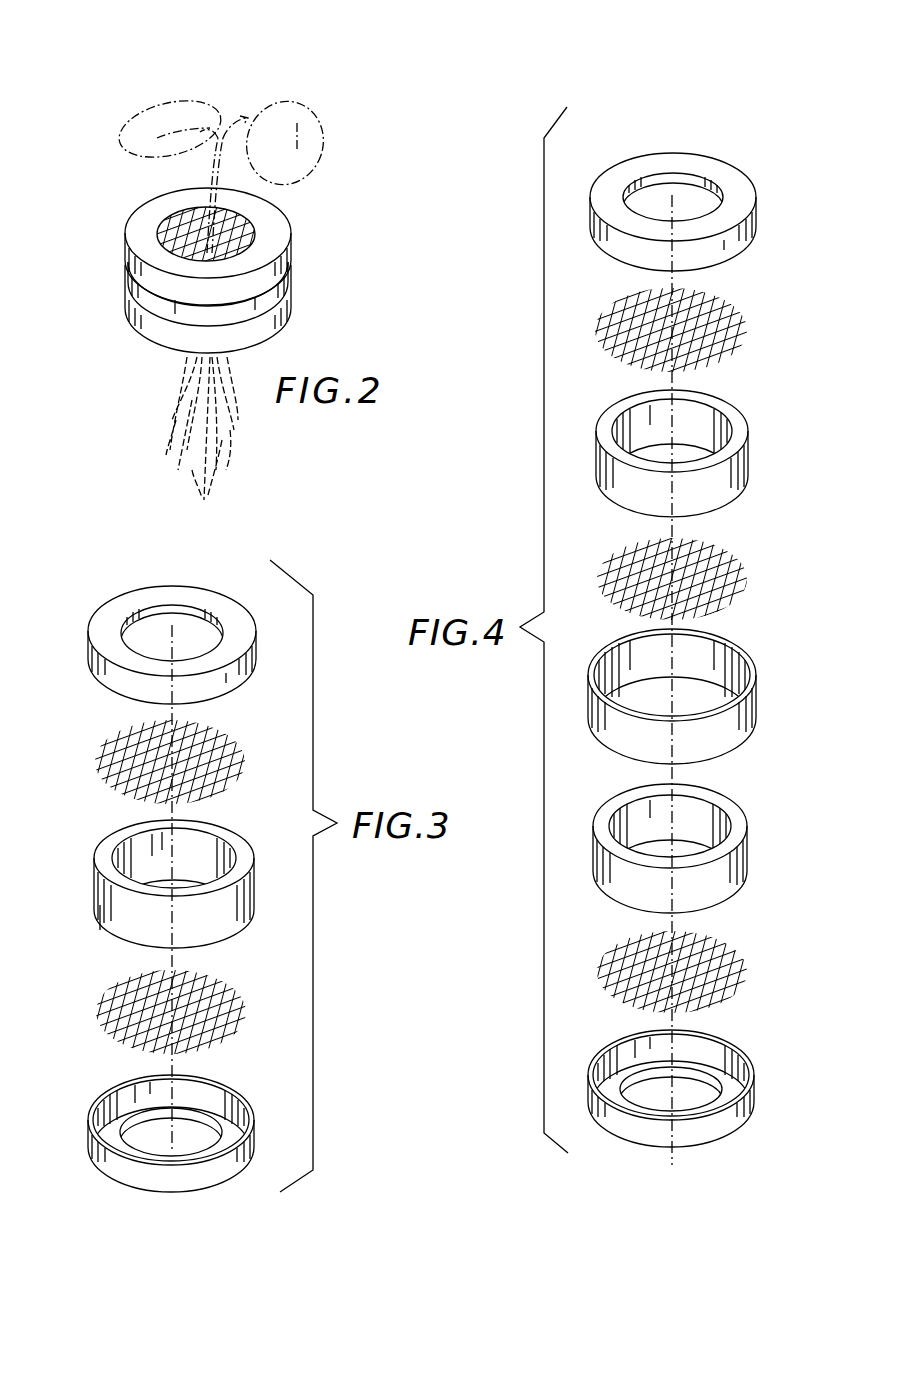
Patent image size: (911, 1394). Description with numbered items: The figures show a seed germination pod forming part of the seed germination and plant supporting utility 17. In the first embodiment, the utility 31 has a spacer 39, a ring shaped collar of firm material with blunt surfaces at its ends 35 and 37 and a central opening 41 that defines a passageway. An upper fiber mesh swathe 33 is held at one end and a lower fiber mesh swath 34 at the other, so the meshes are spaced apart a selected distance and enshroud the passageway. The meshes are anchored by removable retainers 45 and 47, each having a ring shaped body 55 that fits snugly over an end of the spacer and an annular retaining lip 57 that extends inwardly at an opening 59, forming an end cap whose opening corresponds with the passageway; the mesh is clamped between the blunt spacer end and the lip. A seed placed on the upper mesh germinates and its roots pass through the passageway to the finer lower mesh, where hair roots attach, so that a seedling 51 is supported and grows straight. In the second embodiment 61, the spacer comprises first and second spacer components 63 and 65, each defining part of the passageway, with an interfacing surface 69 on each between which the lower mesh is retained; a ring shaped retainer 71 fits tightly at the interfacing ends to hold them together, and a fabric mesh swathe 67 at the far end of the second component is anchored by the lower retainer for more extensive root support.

In FIG. 2, the seed germination and plant supporting utility 17 is at (305, 288).
In FIG. 3, the seed germination and plant supporting utility 17 is at (65, 797).
In FIG. 4, the seed germination and plant supporting utility 17 is at (773, 370).
In FIG. 2, the utility 31 is at (125, 225).
In FIG. 3, the utility 31 is at (74, 790).
In FIG. 2, the upper fiber mesh swathe 33 is at (178, 215).
In FIG. 3, the upper fiber mesh swathe 33 is at (230, 740).
In FIG. 4, the upper fiber mesh swathe 33 is at (618, 293).
In FIG. 3, the lower fiber mesh swath 34 is at (100, 1005).
In FIG. 4, the lower fiber mesh swath 34 is at (630, 562).
In FIG. 3, the end of spacer 35 is at (120, 838).
In FIG. 4, the end of spacer 35 is at (614, 410).
In FIG. 3, the end of spacer 37 is at (110, 937).
In FIG. 4, the end of spacer 37 is at (722, 905).
In FIG. 2, the spacer 39 is at (130, 298).
In FIG. 3, the spacer 39 is at (97, 887).
In FIG. 4, the spacer 39 is at (747, 840).
In FIG. 2, the central opening 41 is at (238, 235).
In FIG. 3, the central opening 41 is at (213, 862).
In FIG. 4, the central opening 41 is at (702, 420).
In FIG. 2, the retainer 45 is at (125, 250).
In FIG. 3, the retainer 45 is at (228, 613).
In FIG. 4, the retainer 45 is at (696, 155).
In FIG. 2, the retainer 47 is at (141, 325).
In FIG. 3, the retainer 47 is at (217, 1170).
In FIG. 4, the retainer 47 is at (743, 1107).
In FIG. 2, the seedling 51 is at (300, 93).
In FIG. 3, the ring shaped body 55 is at (88, 638).
In FIG. 4, the ring shaped body 55 is at (590, 213).
In FIG. 3, the annular retaining lip 57 is at (153, 620).
In FIG. 4, the annular retaining lip 57 is at (650, 190).
In FIG. 3, the opening 59 is at (185, 635).
In FIG. 4, the opening 59 is at (658, 203).
In FIG. 4, the second embodiment 61 is at (781, 245).
In FIG. 4, the first spacer component 63 is at (597, 480).
In FIG. 4, the second spacer component 65 is at (592, 833).
In FIG. 4, the fabric mesh swathe 67 is at (620, 943).
In FIG. 4, the interfacing surface 69 is at (712, 507).
In FIG. 4, the retainer 71 is at (610, 648).